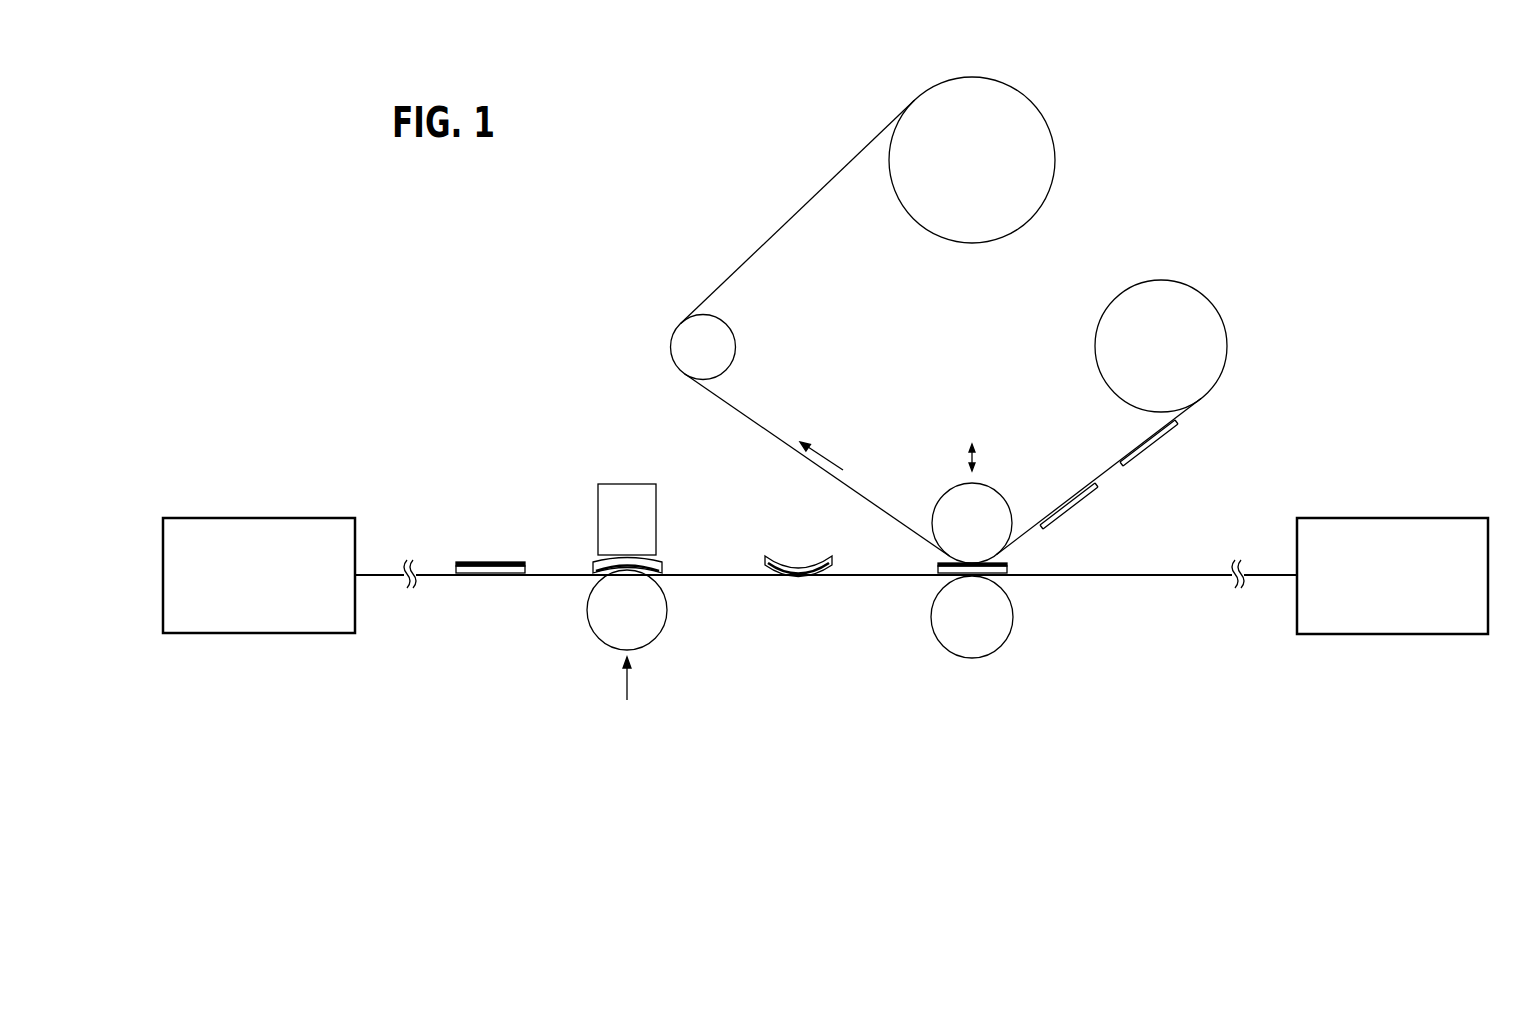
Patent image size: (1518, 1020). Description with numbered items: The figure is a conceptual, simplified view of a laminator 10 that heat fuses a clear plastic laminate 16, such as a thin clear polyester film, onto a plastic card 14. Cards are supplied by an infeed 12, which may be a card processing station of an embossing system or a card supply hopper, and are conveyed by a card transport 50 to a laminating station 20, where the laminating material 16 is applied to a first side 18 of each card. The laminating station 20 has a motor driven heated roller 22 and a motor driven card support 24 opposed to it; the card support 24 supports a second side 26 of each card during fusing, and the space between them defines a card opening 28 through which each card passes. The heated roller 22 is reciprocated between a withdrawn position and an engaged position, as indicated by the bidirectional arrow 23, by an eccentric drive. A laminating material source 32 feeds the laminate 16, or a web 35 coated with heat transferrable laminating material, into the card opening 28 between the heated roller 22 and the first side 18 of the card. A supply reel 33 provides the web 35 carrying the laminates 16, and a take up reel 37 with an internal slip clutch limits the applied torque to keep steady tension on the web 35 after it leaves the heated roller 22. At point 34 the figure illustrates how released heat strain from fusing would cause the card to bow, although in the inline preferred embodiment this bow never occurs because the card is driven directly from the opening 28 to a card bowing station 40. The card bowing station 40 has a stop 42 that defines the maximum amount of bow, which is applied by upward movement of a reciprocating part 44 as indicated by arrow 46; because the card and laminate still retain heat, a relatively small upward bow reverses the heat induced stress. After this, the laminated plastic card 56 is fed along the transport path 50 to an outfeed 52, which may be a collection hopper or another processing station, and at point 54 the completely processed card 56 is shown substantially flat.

The laminator 10 is at (773, 188).
The infeed 12 is at (1346, 517).
The plastic card 14 is at (1014, 568).
The clear plastic laminate 16 is at (1010, 566).
The first side 18 is at (936, 568).
The laminating station 20 is at (888, 396).
The heated roller 22 is at (990, 488).
The bidirectional arrow 23 is at (973, 442).
The card support 24 is at (990, 652).
The second side 26 is at (945, 578).
The card opening 28 is at (968, 562).
The laminating material source 32 is at (1108, 212).
The supply reel 33 is at (1205, 295).
The point 34 is at (794, 573).
The web 35 is at (1172, 424).
The take up reel 37 is at (1050, 128).
The card bowing station 40 is at (622, 448).
The stop 42 is at (608, 496).
The reciprocating part 44 is at (657, 636).
The arrow 46 is at (627, 684).
The card transport 50 is at (548, 585).
The outfeed 52 is at (205, 517).
The point 54 is at (487, 560).
The laminated plastic card 56 is at (478, 585).